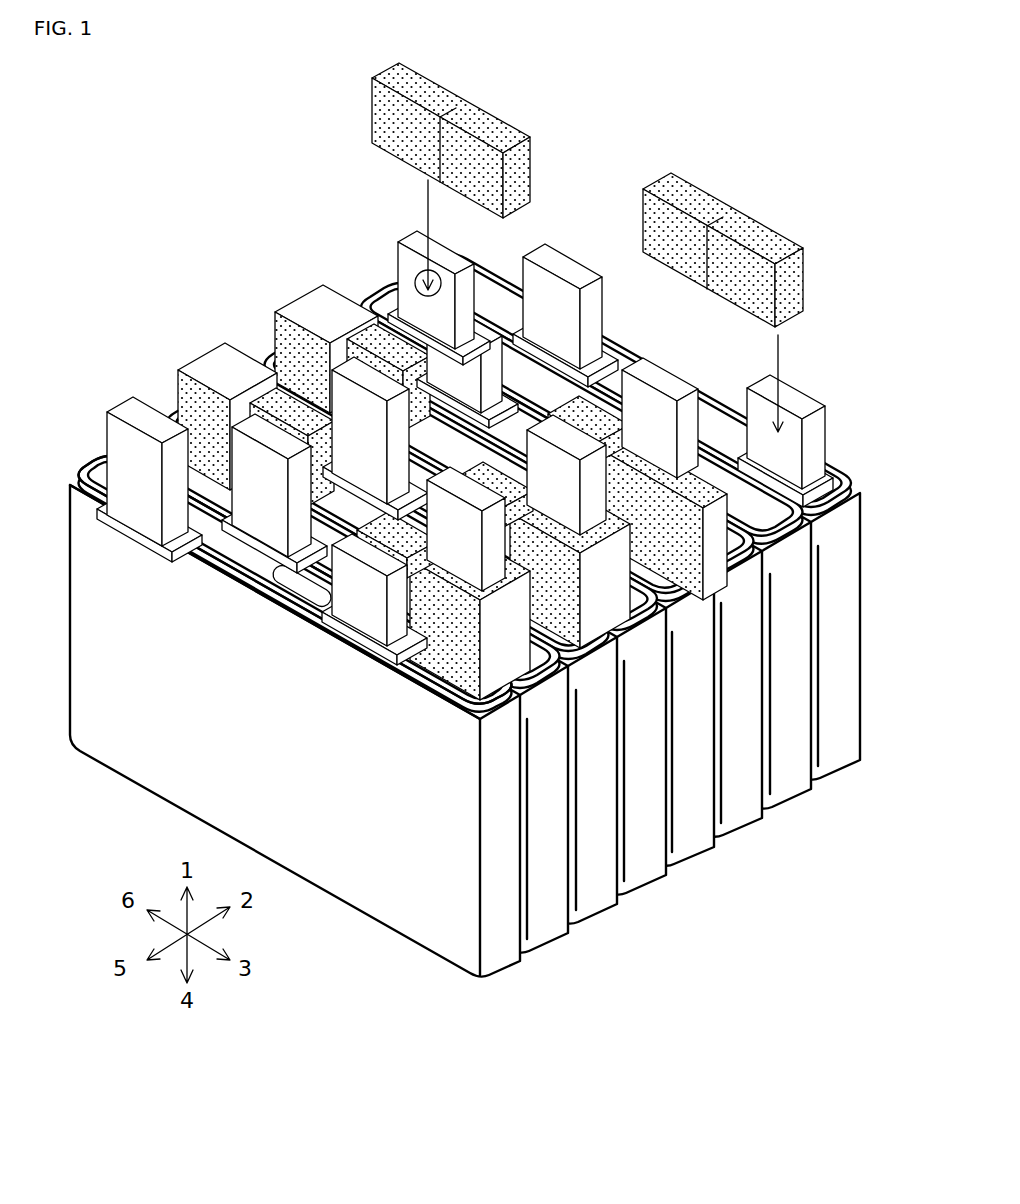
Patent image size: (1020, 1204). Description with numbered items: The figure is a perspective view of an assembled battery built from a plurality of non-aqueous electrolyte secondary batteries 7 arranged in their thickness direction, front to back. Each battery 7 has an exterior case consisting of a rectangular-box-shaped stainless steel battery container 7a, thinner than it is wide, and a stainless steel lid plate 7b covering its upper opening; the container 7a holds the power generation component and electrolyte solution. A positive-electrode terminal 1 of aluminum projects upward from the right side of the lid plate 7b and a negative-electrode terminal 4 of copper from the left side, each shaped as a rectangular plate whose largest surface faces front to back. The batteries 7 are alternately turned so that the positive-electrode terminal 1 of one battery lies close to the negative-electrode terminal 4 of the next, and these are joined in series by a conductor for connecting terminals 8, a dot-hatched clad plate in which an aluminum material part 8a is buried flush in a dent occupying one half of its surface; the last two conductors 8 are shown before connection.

The positive-electrode terminal 1 is at (567, 268).
The negative-electrode terminal 4 is at (418, 240).
The non-aqueous electrolyte secondary battery 7 is at (521, 989).
The battery container 7a is at (382, 890).
The lid plate 7b is at (247, 553).
The conductor for connecting terminals 8 is at (472, 389).
The aluminum material part 8a is at (480, 135).